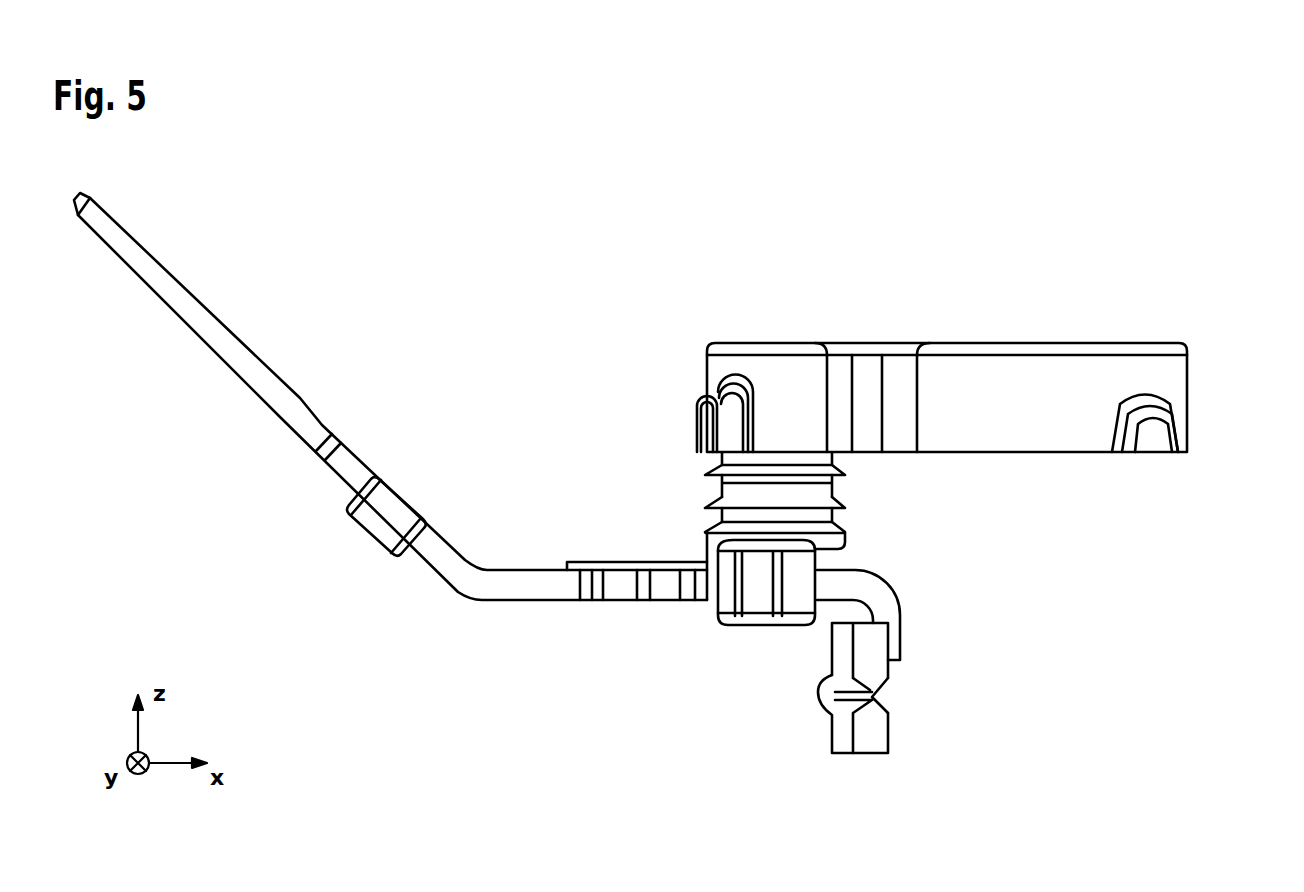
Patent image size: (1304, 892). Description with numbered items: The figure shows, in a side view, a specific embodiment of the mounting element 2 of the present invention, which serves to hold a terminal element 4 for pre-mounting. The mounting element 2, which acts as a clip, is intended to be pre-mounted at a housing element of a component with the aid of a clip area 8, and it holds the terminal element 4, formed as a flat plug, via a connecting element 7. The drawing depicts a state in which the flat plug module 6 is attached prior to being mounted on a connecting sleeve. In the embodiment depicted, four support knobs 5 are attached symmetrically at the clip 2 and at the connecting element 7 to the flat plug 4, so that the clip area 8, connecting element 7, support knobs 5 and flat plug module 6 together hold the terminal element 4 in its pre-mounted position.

The mounting element 2 is at (976, 390).
The terminal element 4 is at (208, 327).
The support knob 5 is at (1154, 437).
The flat plug module 6 is at (533, 539).
The connecting element 7 is at (775, 365).
The clip area 8 is at (1080, 365).